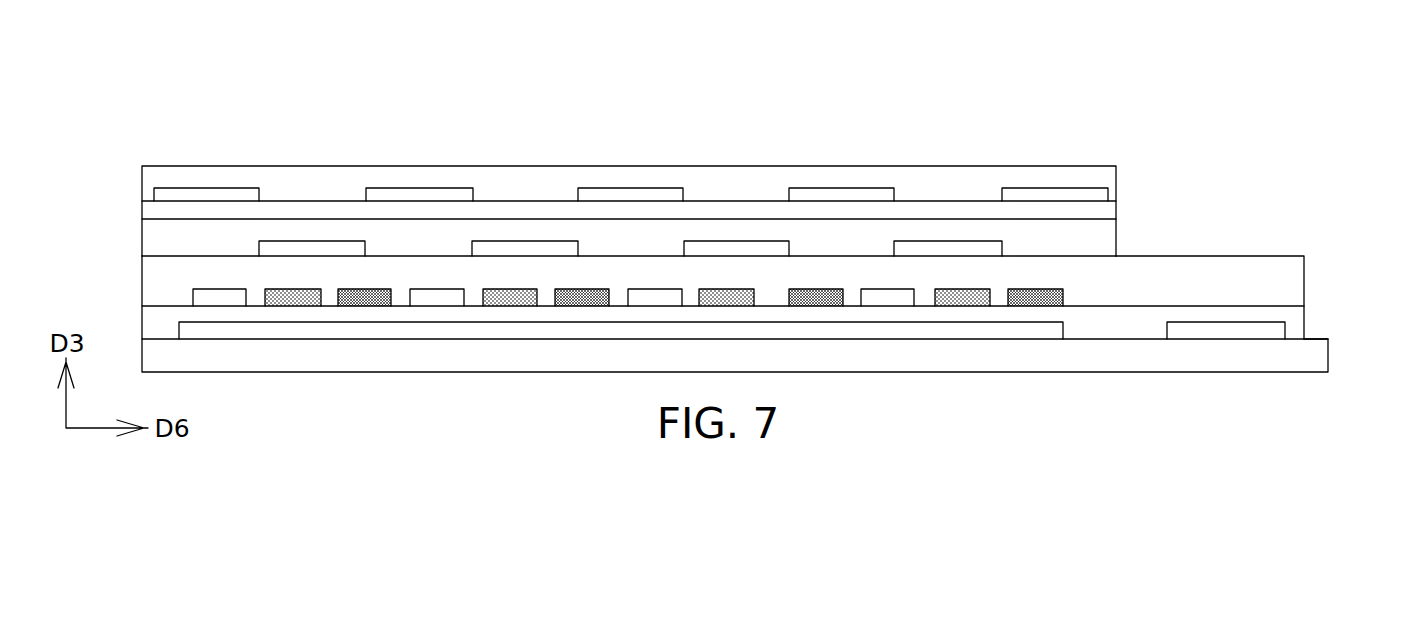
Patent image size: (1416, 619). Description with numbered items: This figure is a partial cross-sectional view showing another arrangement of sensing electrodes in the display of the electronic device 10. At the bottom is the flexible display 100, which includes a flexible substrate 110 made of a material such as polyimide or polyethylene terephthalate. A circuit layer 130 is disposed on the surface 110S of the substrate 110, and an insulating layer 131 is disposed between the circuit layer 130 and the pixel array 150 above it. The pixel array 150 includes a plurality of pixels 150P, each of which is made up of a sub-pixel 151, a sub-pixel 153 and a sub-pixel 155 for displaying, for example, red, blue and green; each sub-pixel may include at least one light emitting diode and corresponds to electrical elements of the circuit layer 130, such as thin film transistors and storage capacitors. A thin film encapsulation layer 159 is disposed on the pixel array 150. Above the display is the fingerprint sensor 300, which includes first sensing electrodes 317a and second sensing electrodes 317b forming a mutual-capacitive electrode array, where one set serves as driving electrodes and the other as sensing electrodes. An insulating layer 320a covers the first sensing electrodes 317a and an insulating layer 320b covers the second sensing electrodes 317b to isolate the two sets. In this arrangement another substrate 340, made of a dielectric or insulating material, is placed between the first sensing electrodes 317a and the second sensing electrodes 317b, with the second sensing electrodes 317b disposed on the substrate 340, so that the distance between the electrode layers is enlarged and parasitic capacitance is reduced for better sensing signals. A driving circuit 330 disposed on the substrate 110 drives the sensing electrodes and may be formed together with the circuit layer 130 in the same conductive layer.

The electronic device 10 is at (1175, 140).
The flexible display 100 is at (1352, 257).
The substrate 110 is at (1007, 355).
The surface of the substrate 110S is at (1315, 337).
The circuit layer 130 is at (605, 330).
The insulating layer 131 is at (295, 313).
The pixel array 150 is at (545, 77).
The pixel 150P is at (387, 130).
The sub-pixel 151 is at (212, 297).
The sub-pixel 153 is at (285, 297).
The sub-pixel 155 is at (358, 297).
The thin film encapsulation layer 159 is at (404, 274).
The fingerprint sensor 300 is at (1352, 185).
The first sensing electrodes 317a is at (730, 247).
The second sensing electrodes 317b is at (850, 193).
The insulating layer 320a is at (1102, 241).
The insulating layer 320b is at (772, 185).
The driving circuit 330 is at (1240, 332).
The substrate 340 is at (650, 207).